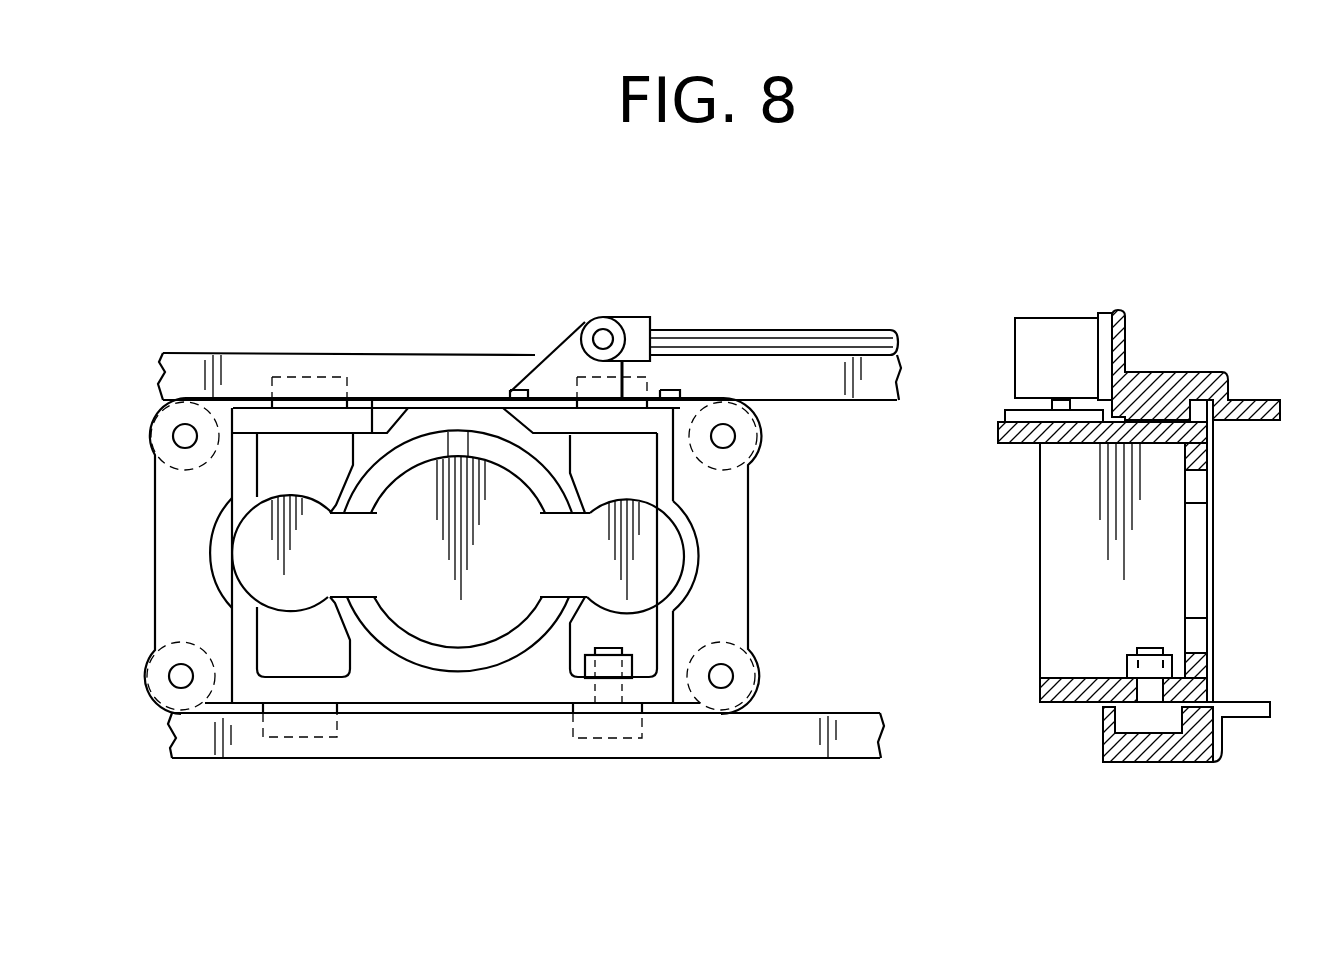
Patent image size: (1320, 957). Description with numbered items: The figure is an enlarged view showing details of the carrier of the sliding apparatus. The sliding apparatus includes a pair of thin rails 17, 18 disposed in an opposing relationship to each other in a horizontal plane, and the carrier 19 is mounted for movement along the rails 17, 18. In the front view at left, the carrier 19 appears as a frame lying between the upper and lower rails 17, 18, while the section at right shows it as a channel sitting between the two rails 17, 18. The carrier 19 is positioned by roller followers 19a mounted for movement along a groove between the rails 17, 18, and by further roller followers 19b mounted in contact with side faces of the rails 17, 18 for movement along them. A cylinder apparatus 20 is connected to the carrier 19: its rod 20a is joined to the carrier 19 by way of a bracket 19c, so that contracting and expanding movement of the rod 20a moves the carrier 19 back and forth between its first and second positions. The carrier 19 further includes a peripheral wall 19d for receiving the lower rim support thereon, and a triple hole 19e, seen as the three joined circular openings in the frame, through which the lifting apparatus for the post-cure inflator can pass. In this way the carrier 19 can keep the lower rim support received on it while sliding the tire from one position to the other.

The rail 17 is at (550, 740).
The rail 18 is at (718, 370).
The carrier 19 is at (752, 572).
The roller follower 19a is at (642, 738).
The roller follower 19b is at (758, 692).
The bracket 19c is at (575, 320).
The peripheral wall 19d is at (447, 668).
The triple hole 19e is at (412, 622).
The cylinder apparatus 20 is at (1015, 344).
The rod 20a is at (836, 330).